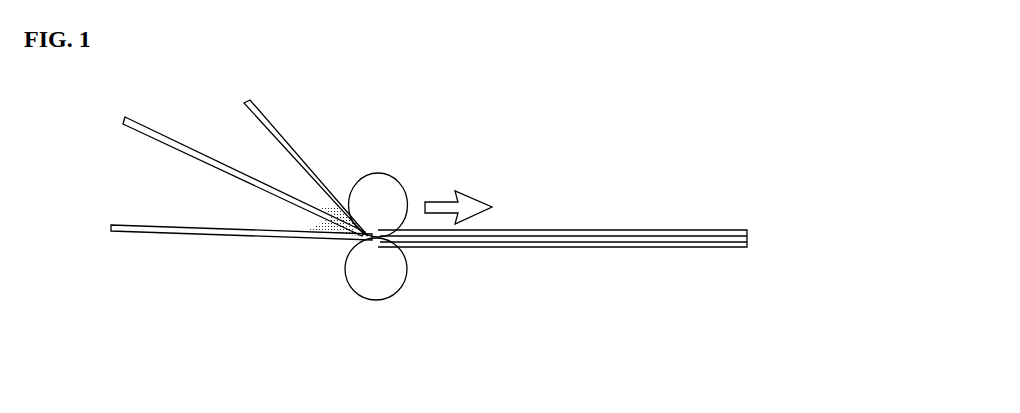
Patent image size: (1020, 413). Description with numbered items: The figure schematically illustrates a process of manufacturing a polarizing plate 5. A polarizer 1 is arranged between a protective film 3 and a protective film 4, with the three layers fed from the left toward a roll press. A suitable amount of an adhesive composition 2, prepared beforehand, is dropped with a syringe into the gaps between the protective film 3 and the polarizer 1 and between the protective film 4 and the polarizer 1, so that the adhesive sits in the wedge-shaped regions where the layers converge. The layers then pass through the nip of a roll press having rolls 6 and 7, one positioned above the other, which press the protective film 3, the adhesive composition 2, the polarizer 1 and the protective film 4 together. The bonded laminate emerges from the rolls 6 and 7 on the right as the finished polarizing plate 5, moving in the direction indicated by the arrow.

The polarizer 1 is at (152, 127).
The adhesive composition 2 is at (313, 233).
The protective film 3 is at (270, 123).
The protective film 4 is at (120, 223).
The polarizing plate 5 is at (637, 230).
The roll 6 is at (362, 290).
The roll 7 is at (393, 187).